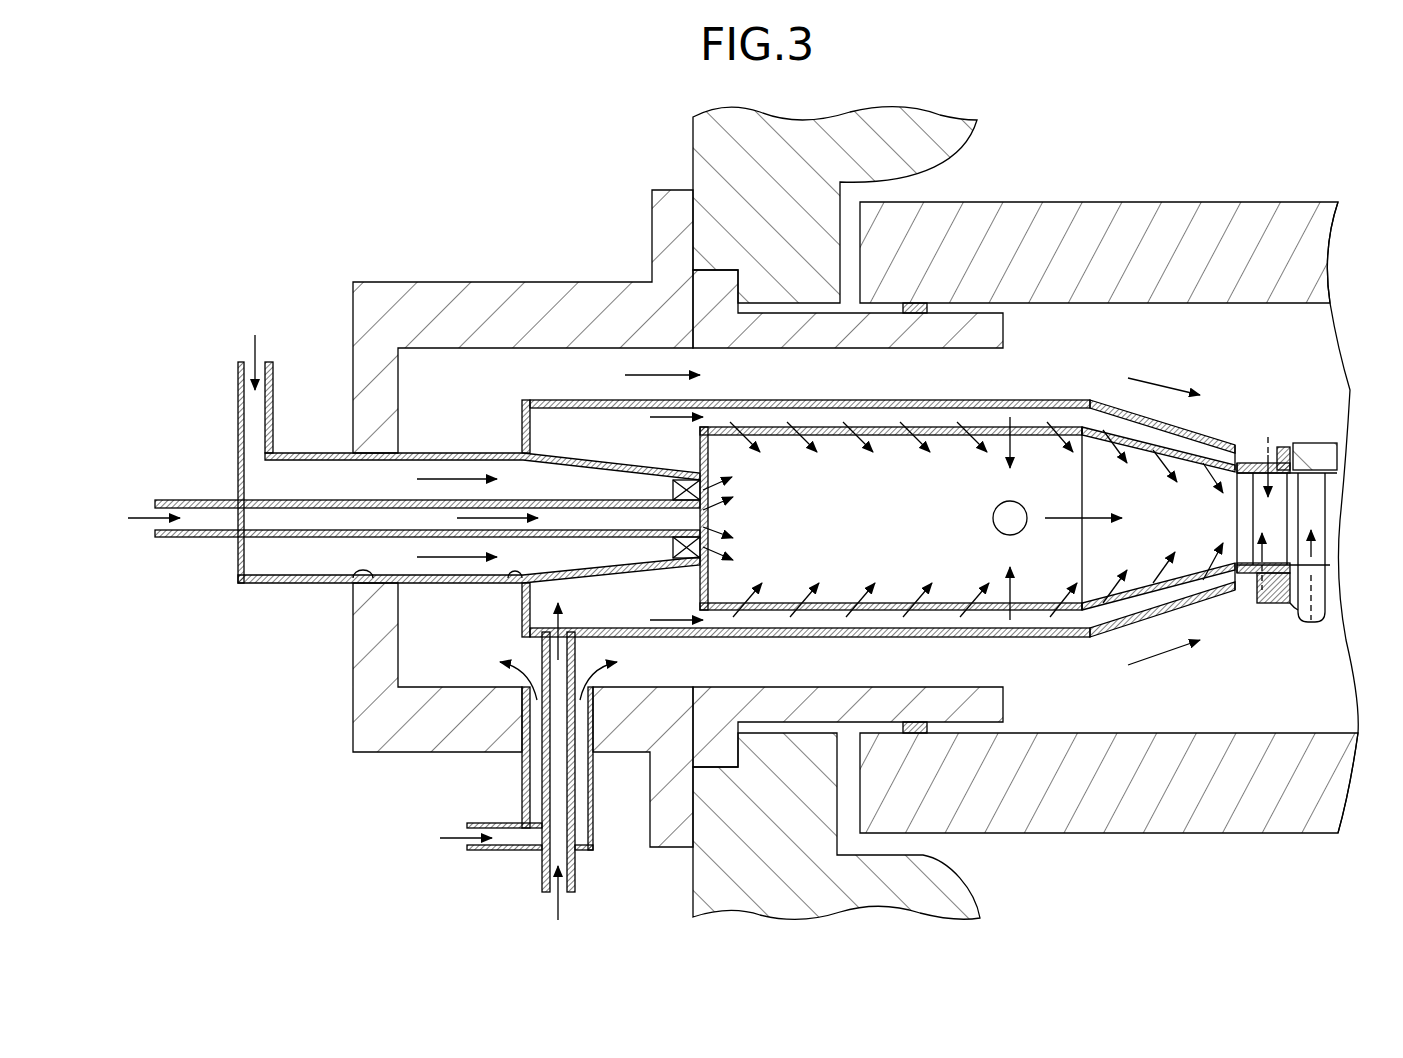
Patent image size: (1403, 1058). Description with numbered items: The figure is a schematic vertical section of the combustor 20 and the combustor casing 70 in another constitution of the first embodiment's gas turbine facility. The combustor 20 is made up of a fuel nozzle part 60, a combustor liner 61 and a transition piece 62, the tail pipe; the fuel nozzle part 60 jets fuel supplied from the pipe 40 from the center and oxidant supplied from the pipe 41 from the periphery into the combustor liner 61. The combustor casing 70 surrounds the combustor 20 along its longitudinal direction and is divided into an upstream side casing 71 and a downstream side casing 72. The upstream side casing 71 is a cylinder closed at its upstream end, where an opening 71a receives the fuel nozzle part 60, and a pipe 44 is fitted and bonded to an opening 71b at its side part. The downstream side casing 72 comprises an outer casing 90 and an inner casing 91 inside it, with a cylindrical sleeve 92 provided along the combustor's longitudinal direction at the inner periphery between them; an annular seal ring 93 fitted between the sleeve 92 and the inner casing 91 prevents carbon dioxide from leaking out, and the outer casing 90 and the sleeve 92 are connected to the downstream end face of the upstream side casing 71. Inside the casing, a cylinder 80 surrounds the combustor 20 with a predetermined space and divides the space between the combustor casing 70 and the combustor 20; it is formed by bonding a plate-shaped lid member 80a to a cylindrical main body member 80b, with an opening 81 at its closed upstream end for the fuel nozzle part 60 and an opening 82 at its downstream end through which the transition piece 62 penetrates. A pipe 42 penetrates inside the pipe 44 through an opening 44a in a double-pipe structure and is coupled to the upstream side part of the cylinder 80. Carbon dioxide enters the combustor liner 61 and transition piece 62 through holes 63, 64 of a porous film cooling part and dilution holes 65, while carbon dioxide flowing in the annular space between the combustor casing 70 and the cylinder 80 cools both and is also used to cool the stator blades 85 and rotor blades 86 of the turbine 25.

The combustor 20 is at (683, 447).
The turbine 25 is at (1335, 417).
The pipe 40 is at (198, 538).
The pipe 41 is at (237, 408).
The pipe 42 is at (542, 875).
The pipe 44 is at (522, 792).
The opening 44a is at (577, 875).
The fuel nozzle part 60 is at (658, 572).
The combustor liner 61 is at (977, 613).
The transition piece 62 is at (1187, 583).
The holes 63 is at (1055, 613).
The holes 64 is at (1107, 585).
The dilution holes 65 is at (993, 518).
The combustor casing 70 is at (1140, 130).
The upstream side casing 71 is at (474, 297).
The opening 71a is at (368, 579).
The opening 71b is at (590, 693).
The downstream side casing 72 is at (1018, 146).
The cylinder 80 is at (818, 390).
The lid member 80a is at (522, 430).
The main body member 80b is at (622, 376).
The opening 81 is at (518, 585).
The opening 82 is at (1262, 590).
The stator blades 85 is at (1273, 507).
The rotor blades 86 is at (1313, 530).
The outer casing 90 is at (917, 160).
The inner casing 91 is at (1020, 213).
The sleeve 92 is at (1003, 337).
The seal ring 93 is at (917, 313).